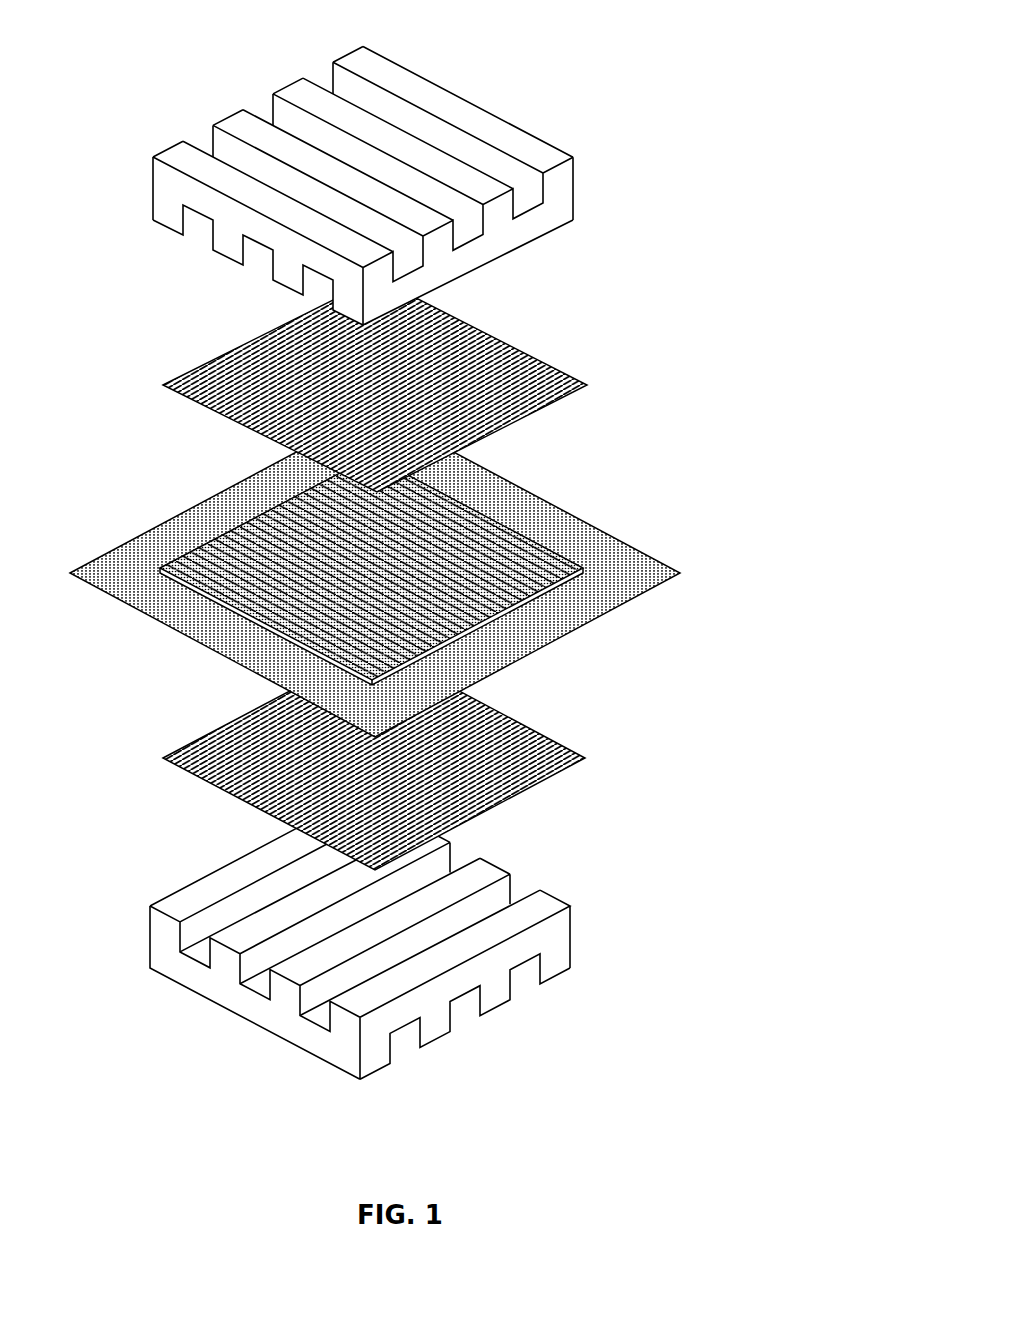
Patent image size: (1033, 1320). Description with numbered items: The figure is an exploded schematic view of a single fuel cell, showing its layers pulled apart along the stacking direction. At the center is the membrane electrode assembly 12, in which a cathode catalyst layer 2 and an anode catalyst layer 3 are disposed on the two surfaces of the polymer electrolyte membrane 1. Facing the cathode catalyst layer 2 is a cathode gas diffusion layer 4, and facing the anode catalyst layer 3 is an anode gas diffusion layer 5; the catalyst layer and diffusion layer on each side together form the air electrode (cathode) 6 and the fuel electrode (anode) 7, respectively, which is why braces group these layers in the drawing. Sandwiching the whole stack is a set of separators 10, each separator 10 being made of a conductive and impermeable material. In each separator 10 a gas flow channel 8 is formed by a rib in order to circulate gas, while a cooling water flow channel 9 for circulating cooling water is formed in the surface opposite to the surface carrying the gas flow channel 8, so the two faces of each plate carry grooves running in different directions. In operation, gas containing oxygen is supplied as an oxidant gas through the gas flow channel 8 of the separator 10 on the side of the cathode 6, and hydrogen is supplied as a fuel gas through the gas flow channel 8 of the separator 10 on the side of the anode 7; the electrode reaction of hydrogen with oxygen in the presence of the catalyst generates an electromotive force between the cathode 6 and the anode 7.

The polymer electrolyte membrane 1 is at (679, 573).
The cathode catalyst layer 2 is at (503, 557).
The anode catalyst layer 3 is at (447, 653).
The cathode gas diffusion layer 4 is at (540, 383).
The anode gas diffusion layer 5 is at (517, 762).
The air electrode (cathode) 6 is at (779, 330).
The fuel electrode (anode) 7 is at (781, 612).
The gas flow channel 8 is at (204, 238).
The cooling water flow channel 9 is at (263, 100).
The separator 10 is at (557, 183).
The membrane electrode assembly 12 is at (757, 633).